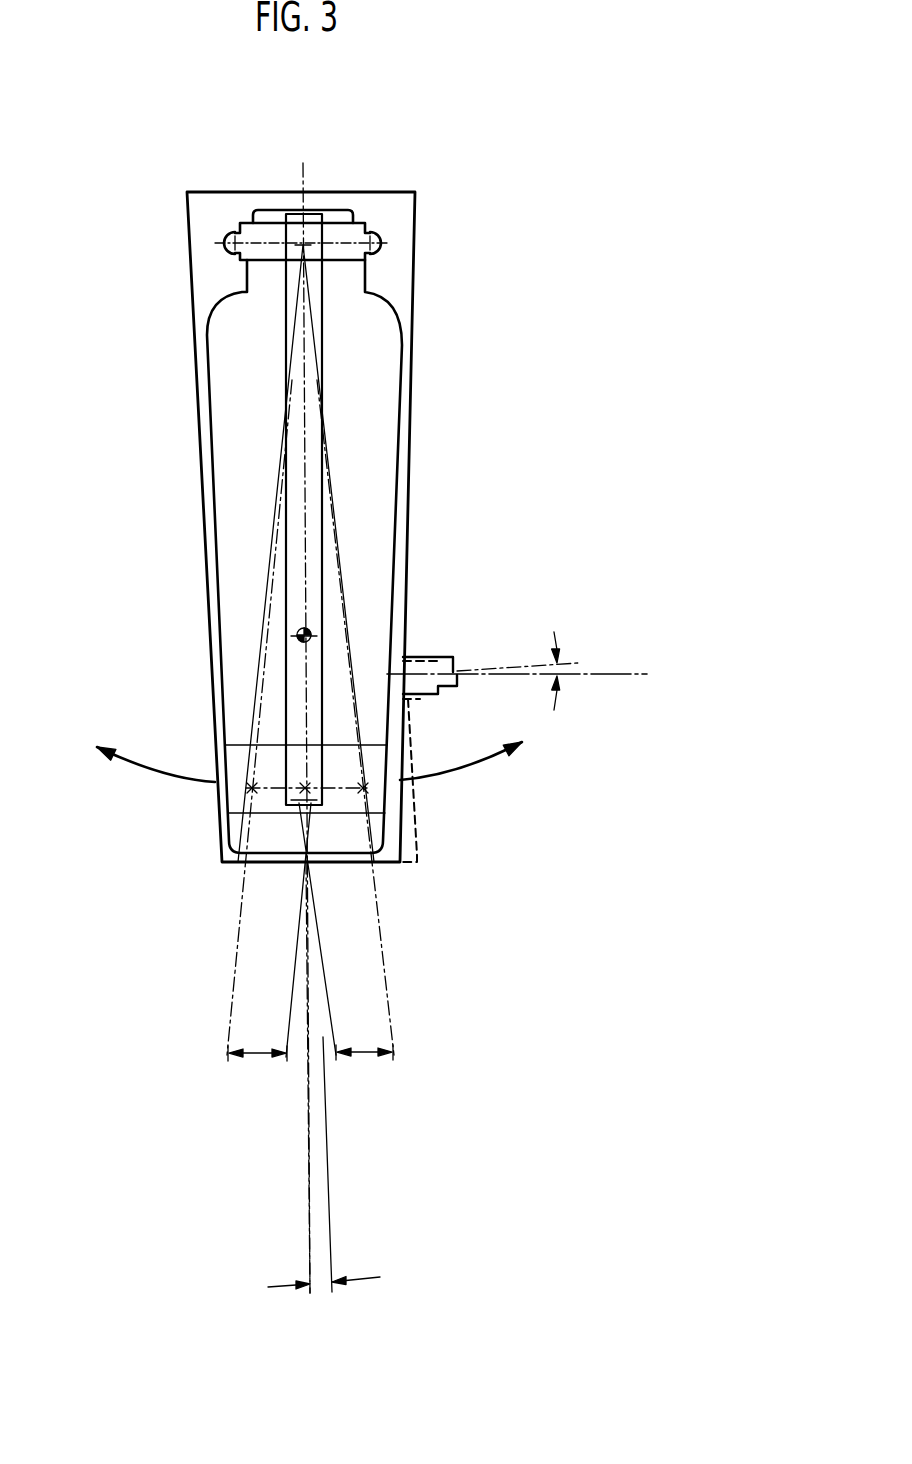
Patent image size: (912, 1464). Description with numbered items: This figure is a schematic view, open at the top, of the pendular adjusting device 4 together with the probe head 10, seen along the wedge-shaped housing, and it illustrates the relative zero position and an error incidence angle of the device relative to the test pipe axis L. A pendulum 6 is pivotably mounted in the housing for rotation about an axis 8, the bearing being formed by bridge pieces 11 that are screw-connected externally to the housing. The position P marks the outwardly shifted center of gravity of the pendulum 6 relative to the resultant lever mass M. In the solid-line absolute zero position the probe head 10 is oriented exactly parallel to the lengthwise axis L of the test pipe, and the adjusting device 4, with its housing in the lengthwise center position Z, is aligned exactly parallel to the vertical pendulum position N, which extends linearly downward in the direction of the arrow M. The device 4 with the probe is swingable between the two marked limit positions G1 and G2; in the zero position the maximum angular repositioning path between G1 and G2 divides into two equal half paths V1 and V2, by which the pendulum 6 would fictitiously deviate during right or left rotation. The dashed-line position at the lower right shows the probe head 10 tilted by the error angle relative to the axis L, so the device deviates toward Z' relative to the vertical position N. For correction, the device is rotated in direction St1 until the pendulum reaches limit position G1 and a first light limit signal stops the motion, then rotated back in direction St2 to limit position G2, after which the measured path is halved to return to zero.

The pendular adjusting device 4 is at (421, 457).
The pendulum 6 is at (313, 506).
The rotation axis 8 is at (304, 243).
The probe head 10 is at (458, 663).
The bridge piece 11 is at (352, 240).
The center of gravity position P is at (310, 630).
The lengthwise axis of the test pipe L is at (623, 673).
The vertical pendulum position N is at (306, 786).
The first pendulum limit position G1 is at (366, 786).
The second pendulum limit position G2 is at (250, 790).
The first positioning direction St1 is at (143, 768).
The left rotation St2 is at (460, 768).
The lengthwise center position Z is at (263, 930).
The first half angular repositioning path V1 is at (365, 1057).
The second half angular repositioning path V2 is at (258, 1058).
The deviated position Z' is at (367, 1164).
The arrow of vertical pendulum direction M is at (310, 1168).